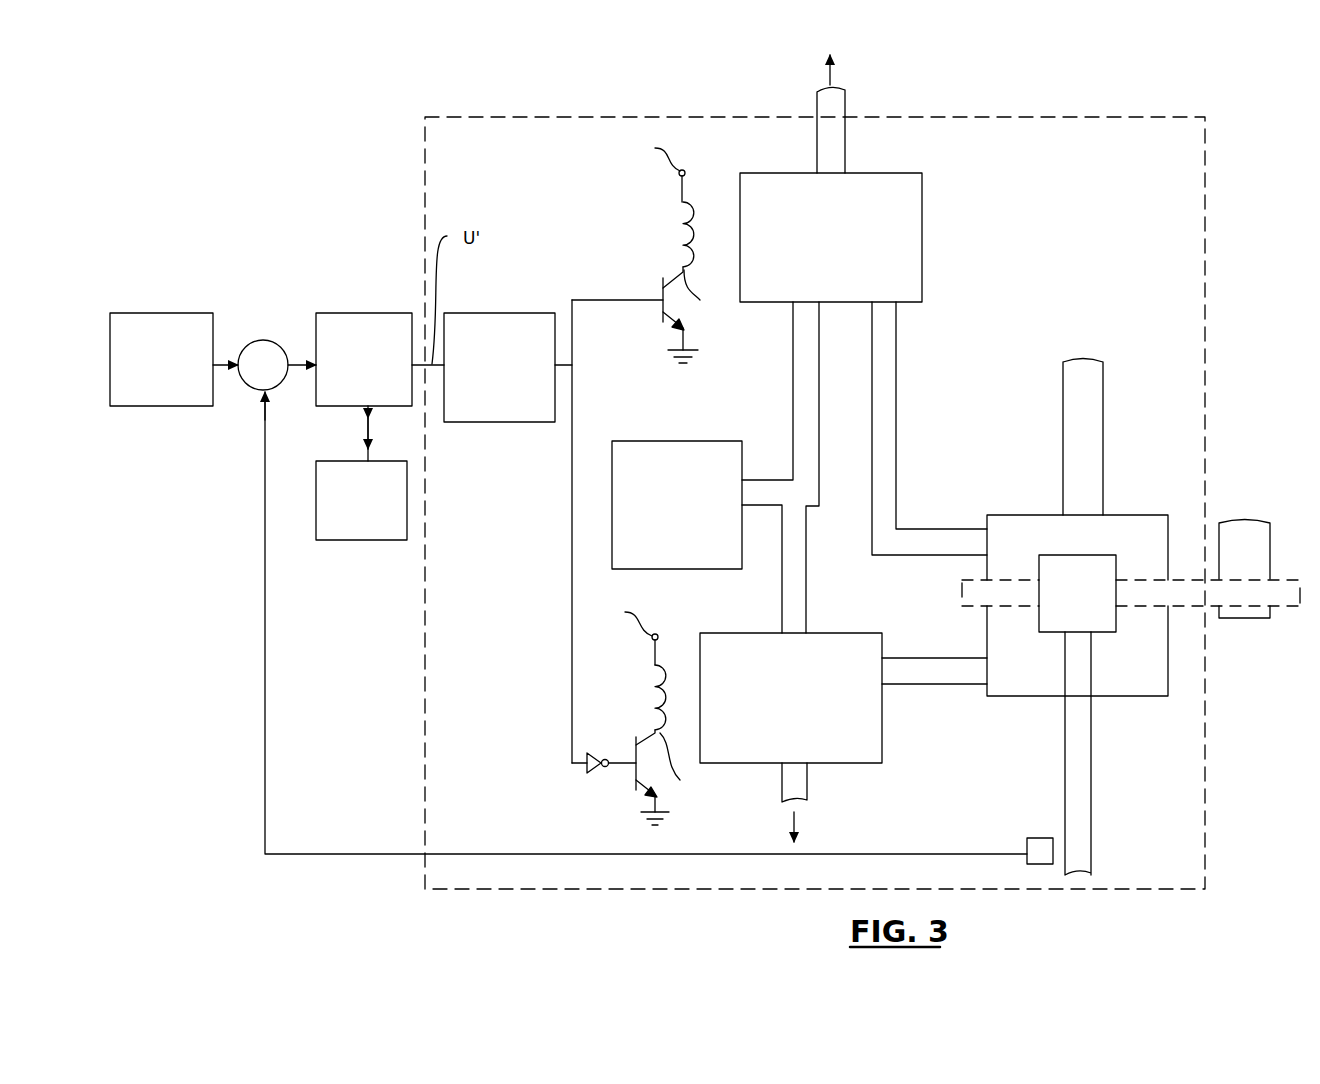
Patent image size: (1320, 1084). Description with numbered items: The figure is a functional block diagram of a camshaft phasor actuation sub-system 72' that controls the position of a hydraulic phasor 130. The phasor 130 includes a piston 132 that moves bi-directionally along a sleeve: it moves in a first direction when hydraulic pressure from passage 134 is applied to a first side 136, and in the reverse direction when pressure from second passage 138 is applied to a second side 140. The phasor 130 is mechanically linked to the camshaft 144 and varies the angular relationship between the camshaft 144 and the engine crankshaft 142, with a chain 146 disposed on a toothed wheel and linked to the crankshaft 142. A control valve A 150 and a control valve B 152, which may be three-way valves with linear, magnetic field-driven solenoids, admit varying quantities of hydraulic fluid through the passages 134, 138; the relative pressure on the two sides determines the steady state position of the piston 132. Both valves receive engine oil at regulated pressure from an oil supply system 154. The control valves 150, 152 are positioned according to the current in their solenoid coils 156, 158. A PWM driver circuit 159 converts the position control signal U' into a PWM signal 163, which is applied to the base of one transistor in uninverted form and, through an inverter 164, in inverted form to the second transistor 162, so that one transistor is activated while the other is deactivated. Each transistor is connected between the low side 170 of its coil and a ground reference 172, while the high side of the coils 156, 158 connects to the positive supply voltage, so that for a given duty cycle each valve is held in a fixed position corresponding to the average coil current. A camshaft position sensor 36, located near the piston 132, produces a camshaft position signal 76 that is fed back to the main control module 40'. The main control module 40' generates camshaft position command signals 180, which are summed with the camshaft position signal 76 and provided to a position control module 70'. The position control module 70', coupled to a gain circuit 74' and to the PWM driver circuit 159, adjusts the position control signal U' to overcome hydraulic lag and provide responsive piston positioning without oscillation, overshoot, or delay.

The camshaft position sensor 36 is at (1038, 838).
The main control module 40' is at (174, 327).
The position control module 70' is at (380, 354).
The camshaft phasor actuation sub-system 72' is at (815, 480).
The gain circuit 74' is at (361, 527).
The camshaft position signal 76 is at (535, 853).
The phasor 130 is at (1025, 515).
The piston 132 is at (1116, 632).
The passage 134 is at (897, 408).
The first side 136 is at (1039, 556).
The second passage 138 is at (945, 658).
The second side 140 is at (1045, 630).
The crankshaft 142 is at (1215, 548).
The camshaft 144 is at (1105, 425).
The chain 146 is at (1200, 608).
The control valve A 150 is at (726, 633).
The control valve B 152 is at (776, 173).
The oil supply system 154 is at (690, 441).
The coil 156 is at (660, 700).
The coil 158 is at (682, 232).
The PWM driver circuit 159 is at (500, 313).
The second transistor 162 is at (662, 293).
The PWM signal 163 is at (572, 553).
The inverter 164 is at (598, 757).
The low side 170 is at (711, 290).
The ground reference 172 is at (692, 350).
The camshaft position command signals 180 is at (227, 366).